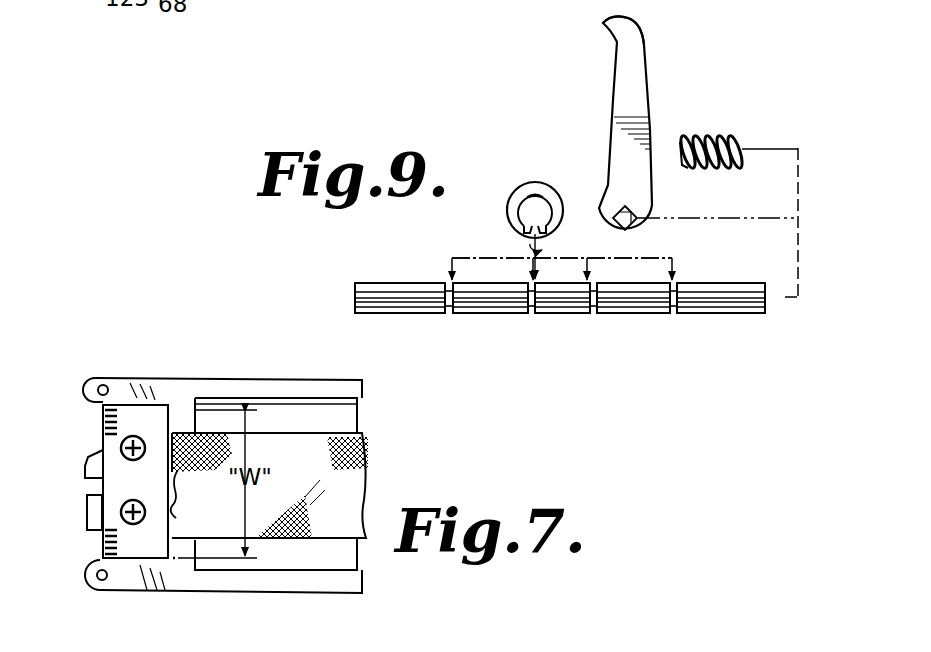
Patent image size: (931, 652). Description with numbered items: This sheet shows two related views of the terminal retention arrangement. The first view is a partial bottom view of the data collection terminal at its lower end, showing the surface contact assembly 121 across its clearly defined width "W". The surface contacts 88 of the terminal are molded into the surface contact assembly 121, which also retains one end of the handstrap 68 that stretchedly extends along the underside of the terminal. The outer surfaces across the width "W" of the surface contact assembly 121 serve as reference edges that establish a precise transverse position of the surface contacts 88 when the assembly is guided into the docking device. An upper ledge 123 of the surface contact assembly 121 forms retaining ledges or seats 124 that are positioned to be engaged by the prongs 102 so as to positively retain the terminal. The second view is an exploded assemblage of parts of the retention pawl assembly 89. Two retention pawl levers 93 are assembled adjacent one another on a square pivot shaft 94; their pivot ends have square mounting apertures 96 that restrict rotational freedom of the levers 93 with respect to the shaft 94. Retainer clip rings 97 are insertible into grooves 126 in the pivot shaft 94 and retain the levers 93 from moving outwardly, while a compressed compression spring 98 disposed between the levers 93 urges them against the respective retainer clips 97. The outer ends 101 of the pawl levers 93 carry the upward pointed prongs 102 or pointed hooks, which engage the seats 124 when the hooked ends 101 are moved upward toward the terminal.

In FIG. 7, the handstrap 68 is at (368, 458).
In FIG. 7, the surface contacts 88 is at (101, 418).
In FIG. 9, the retention pawl assembly 89 is at (579, 338).
In FIG. 9, the retention pawl levers 93 is at (623, 92).
In FIG. 9, the square pivot shaft 94 is at (422, 283).
In FIG. 9, the square mounting apertures 96 is at (634, 226).
In FIG. 9, the retainer clip rings 97 is at (534, 182).
In FIG. 9, the compression spring 98 is at (716, 135).
In FIG. 9, the outer ends 101 is at (649, 27).
In FIG. 9, the pointed prongs 102 is at (603, 23).
In FIG. 7, the surface contact assembly 121 is at (135, 556).
In FIG. 7, the upper ledge 123 is at (173, 420).
In FIG. 7, the retaining ledges or seats 124 is at (201, 494).
In FIG. 9, the grooves 126 is at (452, 313).